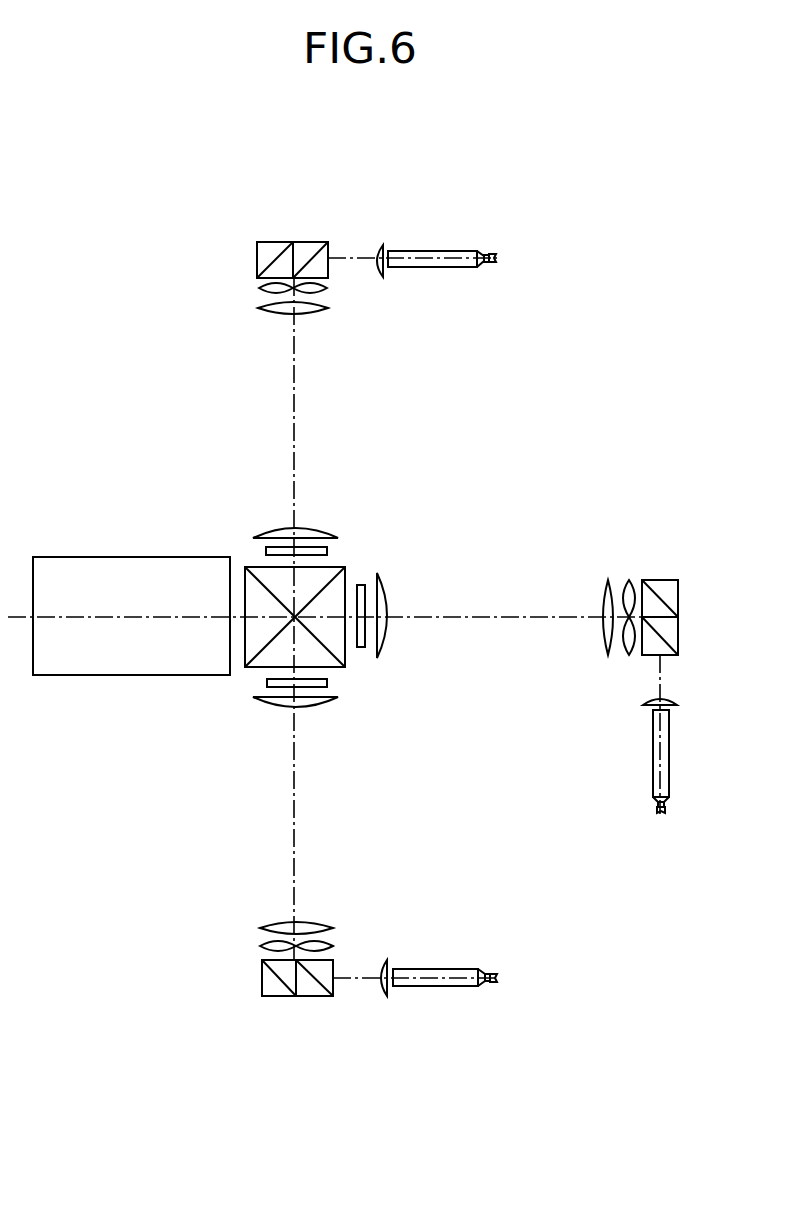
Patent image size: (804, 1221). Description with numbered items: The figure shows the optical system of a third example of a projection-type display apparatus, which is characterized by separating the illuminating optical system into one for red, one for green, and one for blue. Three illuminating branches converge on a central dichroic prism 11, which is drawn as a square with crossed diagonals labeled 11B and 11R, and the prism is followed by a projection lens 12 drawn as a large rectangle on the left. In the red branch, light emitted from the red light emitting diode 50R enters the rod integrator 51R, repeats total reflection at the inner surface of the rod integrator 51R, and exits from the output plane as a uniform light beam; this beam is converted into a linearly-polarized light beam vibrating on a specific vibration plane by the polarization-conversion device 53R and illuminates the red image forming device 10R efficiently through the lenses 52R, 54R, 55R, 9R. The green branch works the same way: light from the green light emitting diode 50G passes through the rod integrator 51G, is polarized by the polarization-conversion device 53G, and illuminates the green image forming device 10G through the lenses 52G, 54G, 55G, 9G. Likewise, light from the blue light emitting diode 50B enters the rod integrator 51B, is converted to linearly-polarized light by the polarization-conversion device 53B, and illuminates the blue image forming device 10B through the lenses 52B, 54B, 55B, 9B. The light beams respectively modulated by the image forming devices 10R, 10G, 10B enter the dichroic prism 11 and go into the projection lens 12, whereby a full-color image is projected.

The lens 9R is at (310, 530).
The lens 9G is at (387, 602).
The lens 9B is at (315, 705).
The red image forming device 10R is at (265, 552).
The green image forming device 10G is at (360, 587).
The blue image forming device 10B is at (265, 683).
The dichroic prism 11 is at (318, 652).
The blue reflecting dichroic surface 11B is at (272, 598).
The red reflecting dichroic surface 11R is at (272, 640).
The projection lens 12 is at (68, 557).
The red light emitting diode 50R is at (496, 258).
The green light emitting diode 50G is at (660, 814).
The blue light emitting diode 50B is at (496, 977).
The rod integrator 51R is at (452, 250).
The rod integrator 51G is at (653, 747).
The rod integrator 51B is at (458, 986).
The lens 52R is at (379, 246).
The lens 52G is at (650, 700).
The lens 52B is at (383, 995).
The polarization-conversion device 53R is at (258, 257).
The polarization-conversion device 53G is at (673, 613).
The polarization-conversion device 53B is at (270, 987).
The lens 54R is at (315, 290).
The lens 54G is at (630, 590).
The lens 54B is at (330, 943).
The lens 55R is at (313, 310).
The lens 55G is at (605, 590).
The lens 55B is at (320, 923).